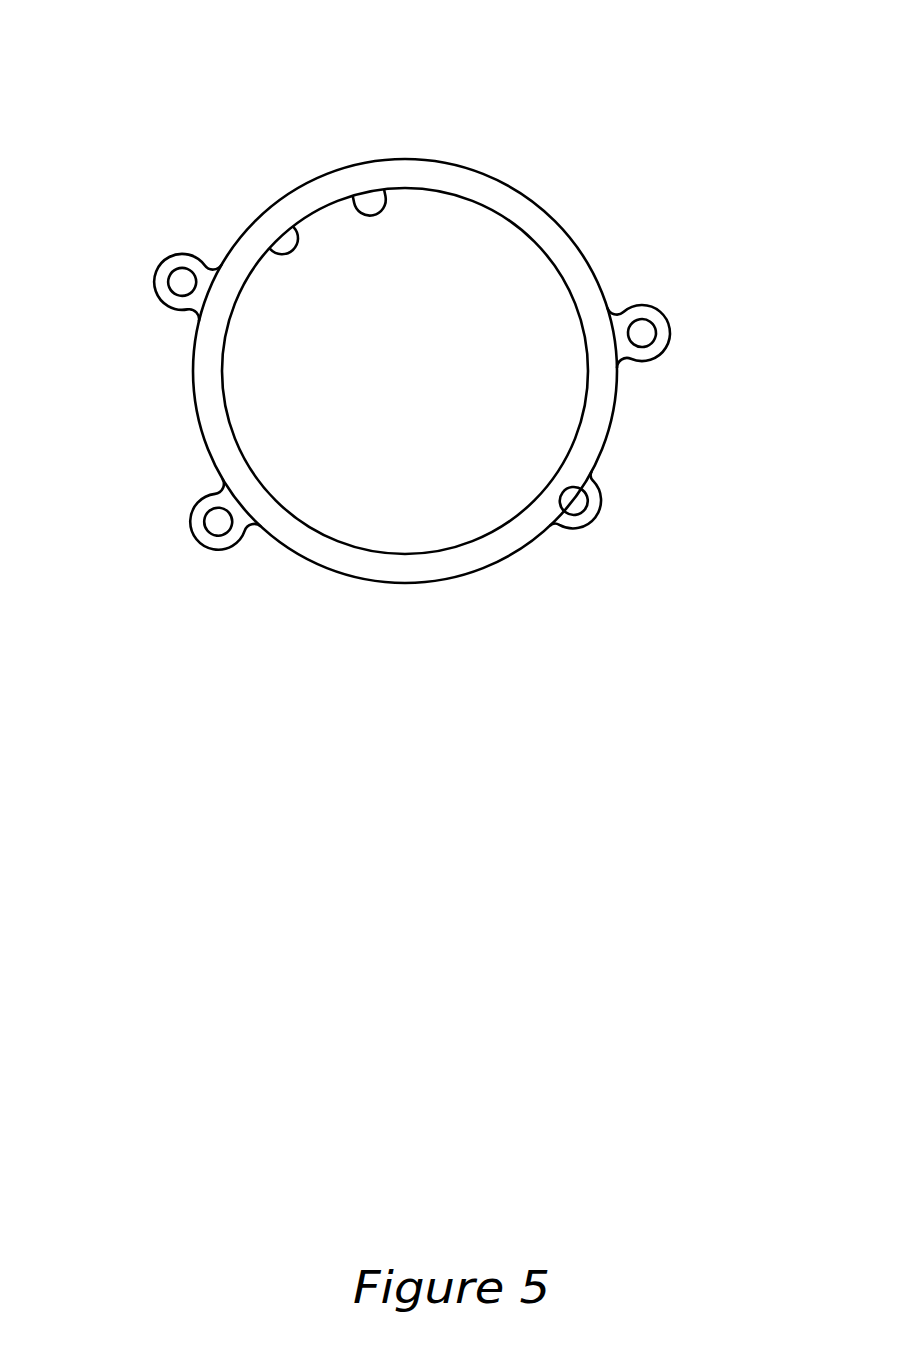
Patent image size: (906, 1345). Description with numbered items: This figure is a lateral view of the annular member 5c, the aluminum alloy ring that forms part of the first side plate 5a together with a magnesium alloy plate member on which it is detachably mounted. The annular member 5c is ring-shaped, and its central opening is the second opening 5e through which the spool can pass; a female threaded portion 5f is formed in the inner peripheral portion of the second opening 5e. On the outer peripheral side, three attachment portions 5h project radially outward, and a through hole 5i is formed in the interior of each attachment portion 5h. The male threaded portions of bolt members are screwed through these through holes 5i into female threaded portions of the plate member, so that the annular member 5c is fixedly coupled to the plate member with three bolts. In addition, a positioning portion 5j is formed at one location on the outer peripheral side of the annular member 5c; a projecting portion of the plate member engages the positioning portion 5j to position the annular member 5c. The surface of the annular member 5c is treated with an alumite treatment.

The first side plate 5a is at (536, 108).
The annular member 5c is at (540, 207).
The second opening 5e is at (278, 243).
The female threaded portion 5f is at (353, 196).
The attachment portions 5h is at (158, 270).
The through holes 5i is at (186, 300).
The positioning portion 5j is at (597, 517).